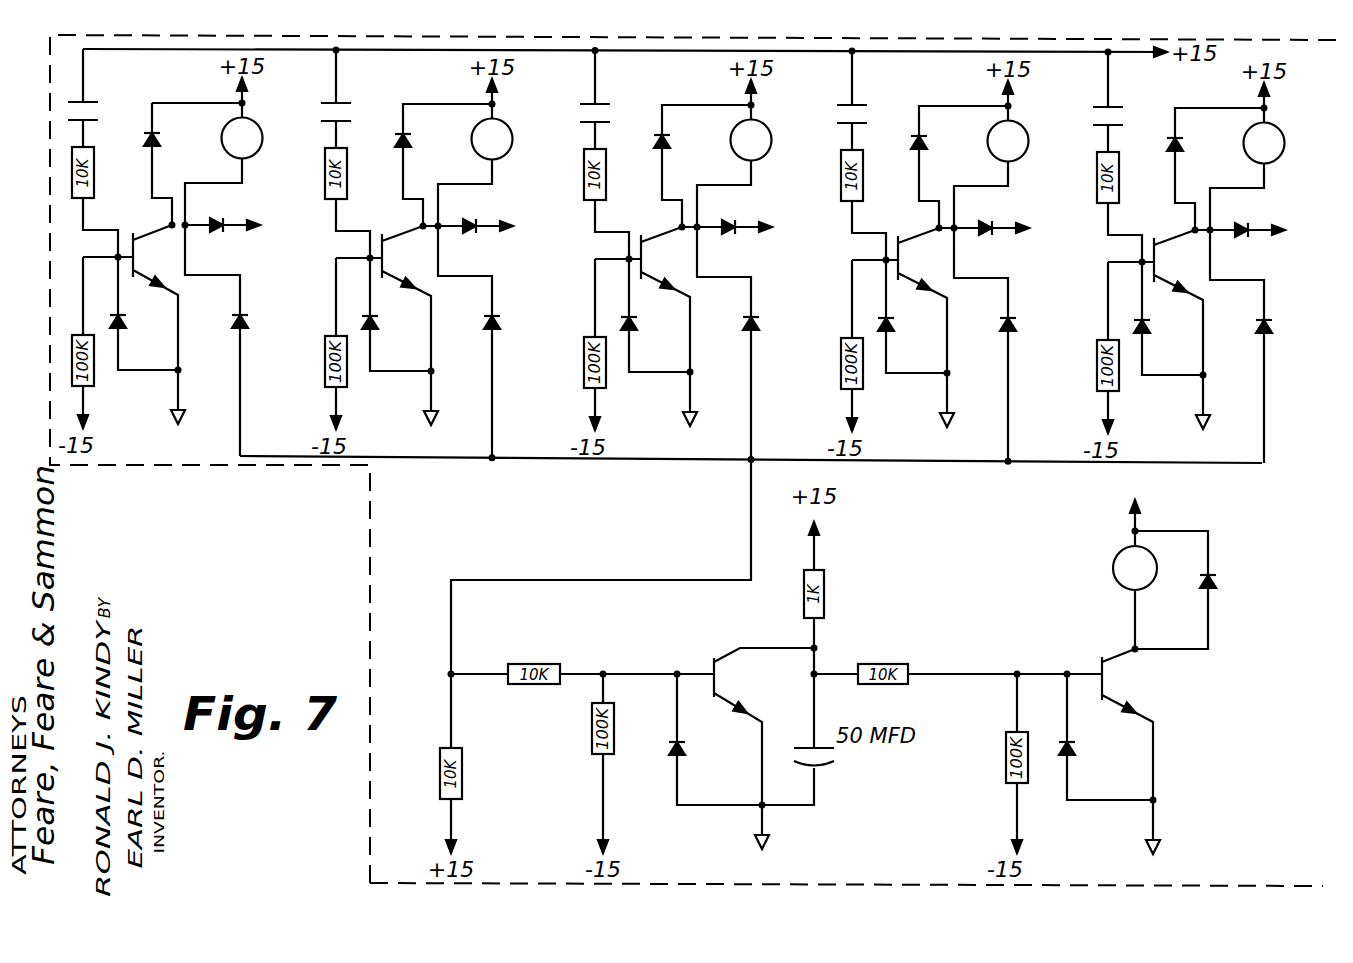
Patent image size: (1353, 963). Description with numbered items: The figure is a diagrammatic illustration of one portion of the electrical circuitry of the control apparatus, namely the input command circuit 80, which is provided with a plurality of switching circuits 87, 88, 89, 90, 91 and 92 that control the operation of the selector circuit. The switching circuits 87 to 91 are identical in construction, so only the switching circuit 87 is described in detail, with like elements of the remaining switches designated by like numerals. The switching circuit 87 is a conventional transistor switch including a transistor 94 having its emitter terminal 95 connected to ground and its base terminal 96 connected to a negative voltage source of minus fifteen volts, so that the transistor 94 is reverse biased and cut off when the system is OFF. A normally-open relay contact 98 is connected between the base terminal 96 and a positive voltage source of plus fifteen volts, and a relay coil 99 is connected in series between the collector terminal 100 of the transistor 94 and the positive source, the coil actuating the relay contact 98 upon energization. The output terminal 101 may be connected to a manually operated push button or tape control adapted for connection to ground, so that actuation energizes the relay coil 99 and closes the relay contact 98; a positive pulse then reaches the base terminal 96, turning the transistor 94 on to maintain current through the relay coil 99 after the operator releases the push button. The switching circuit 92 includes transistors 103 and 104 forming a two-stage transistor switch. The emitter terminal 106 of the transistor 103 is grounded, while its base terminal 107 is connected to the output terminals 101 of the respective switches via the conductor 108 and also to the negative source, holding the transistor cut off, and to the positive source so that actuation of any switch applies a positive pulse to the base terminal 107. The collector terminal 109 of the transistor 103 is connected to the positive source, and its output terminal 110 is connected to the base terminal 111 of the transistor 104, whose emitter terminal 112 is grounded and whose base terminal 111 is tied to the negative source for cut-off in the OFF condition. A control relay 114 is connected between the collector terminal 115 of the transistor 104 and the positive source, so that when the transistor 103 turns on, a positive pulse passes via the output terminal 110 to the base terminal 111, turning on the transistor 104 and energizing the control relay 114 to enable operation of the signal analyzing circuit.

The input command circuit 80 is at (1330, 121).
The switching circuit 87 is at (250, 337).
The switching circuit 88 is at (515, 339).
The switching circuit 89 is at (772, 339).
The switching circuit 90 is at (1026, 341).
The switching circuit 91 is at (1284, 351).
The switching circuit 92 is at (1199, 780).
The transistor 94 is at (135, 240).
The emitter terminal 95 is at (178, 292).
The base terminal 96 is at (118, 257).
The relay contact 98 is at (90, 101).
The relay coil 99 is at (250, 157).
The collector terminal 100 is at (172, 223).
The output terminal 101 is at (240, 227).
The transistor 103 is at (711, 654).
The transistor 104 is at (1107, 658).
The emitter terminal 106 is at (762, 754).
The base terminal 107 is at (677, 672).
The conductor 108 is at (657, 580).
The collector terminal 109 is at (733, 651).
The output terminal 110 is at (820, 672).
The base terminal 111 is at (1067, 672).
The emitter terminal 112 is at (1140, 724).
The control relay 114 is at (1113, 573).
The collector terminal 115 is at (1139, 652).